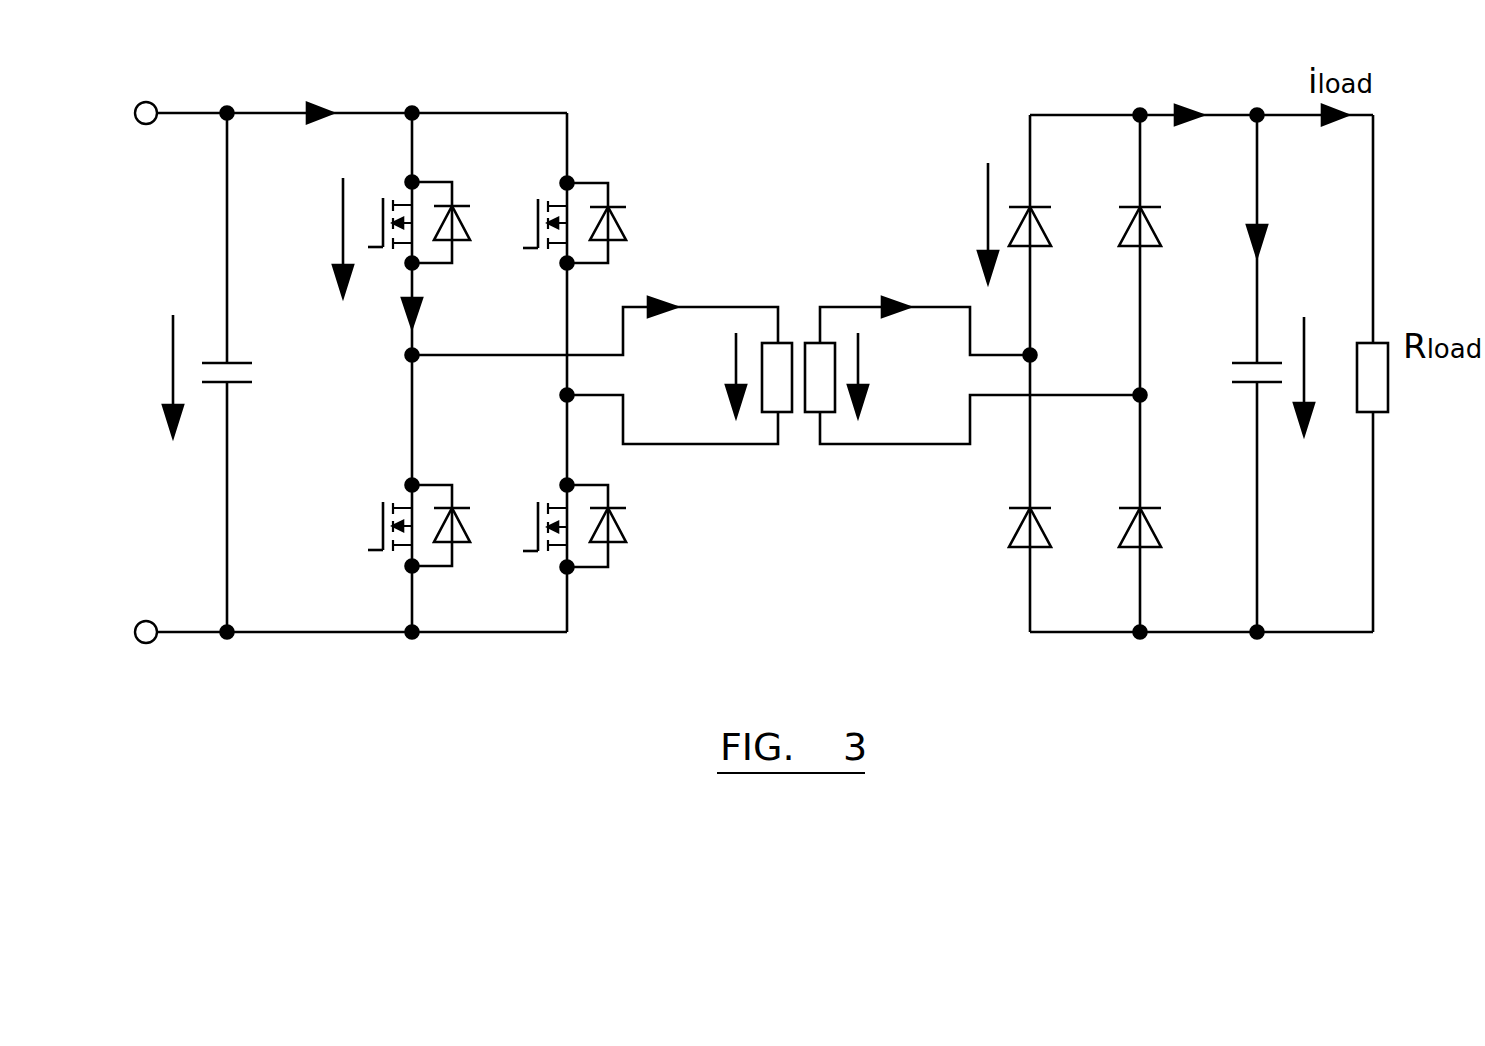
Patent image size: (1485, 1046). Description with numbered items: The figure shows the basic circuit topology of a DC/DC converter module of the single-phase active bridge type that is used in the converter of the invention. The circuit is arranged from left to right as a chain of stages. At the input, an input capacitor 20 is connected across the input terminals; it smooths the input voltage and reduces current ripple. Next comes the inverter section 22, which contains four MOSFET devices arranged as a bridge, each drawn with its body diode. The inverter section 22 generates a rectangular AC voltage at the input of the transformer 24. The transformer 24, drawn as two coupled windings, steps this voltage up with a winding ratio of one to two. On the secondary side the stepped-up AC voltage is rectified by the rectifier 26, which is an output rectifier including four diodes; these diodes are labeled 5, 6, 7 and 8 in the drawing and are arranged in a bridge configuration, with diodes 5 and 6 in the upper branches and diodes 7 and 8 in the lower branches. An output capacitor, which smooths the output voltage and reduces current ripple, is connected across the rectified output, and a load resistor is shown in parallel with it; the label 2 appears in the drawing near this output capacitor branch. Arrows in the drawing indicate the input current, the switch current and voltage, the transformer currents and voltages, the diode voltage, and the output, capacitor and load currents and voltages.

The input capacitor 20 is at (141, 267).
The inverter section 22 is at (538, 67).
The transformer 24 is at (812, 223).
The rectifier 26 is at (1140, 339).
The rectifier diode 5 is at (1042, 212).
The rectifier diode 6 is at (1152, 212).
The rectifier diode 7 is at (1042, 512).
The rectifier diode 8 is at (1152, 512).
The output capacitor 2 is at (1296, 545).